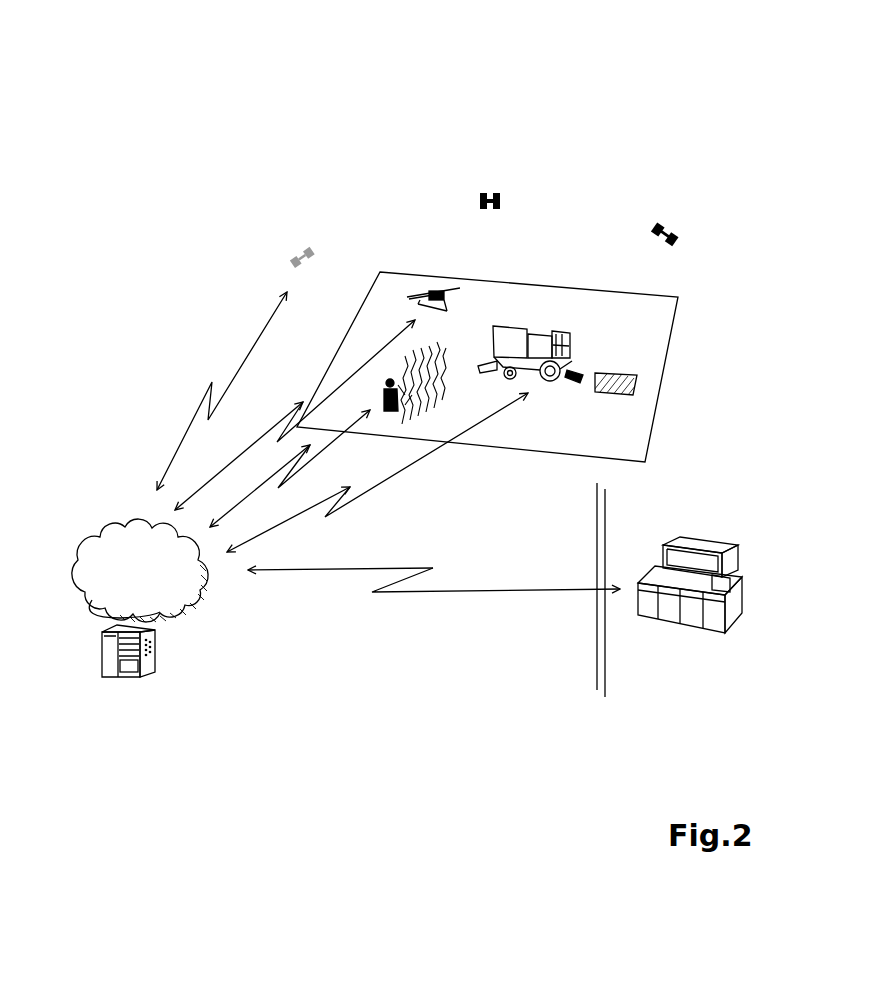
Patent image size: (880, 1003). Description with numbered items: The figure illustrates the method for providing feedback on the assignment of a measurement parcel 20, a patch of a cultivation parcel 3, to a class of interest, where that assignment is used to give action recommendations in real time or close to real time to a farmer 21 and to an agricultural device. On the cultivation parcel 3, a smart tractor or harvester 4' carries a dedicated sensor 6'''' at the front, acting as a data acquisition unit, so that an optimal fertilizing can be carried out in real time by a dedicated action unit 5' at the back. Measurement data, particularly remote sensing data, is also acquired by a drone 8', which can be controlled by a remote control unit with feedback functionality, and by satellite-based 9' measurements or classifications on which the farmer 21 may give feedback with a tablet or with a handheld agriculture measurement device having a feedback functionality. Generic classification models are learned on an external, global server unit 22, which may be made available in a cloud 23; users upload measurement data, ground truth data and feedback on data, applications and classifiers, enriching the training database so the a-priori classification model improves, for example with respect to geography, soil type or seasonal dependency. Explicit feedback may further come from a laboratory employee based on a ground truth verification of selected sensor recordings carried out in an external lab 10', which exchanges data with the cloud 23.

The cultivation parcel 3 is at (359, 238).
The drone 8' is at (611, 205).
The satellite 9' is at (732, 208).
The smart tractor or harvester 4' is at (658, 368).
The action unit 5' is at (655, 432).
The sensor / data acquisition unit 6'''' is at (701, 337).
The measurement parcel 20 is at (702, 402).
The farmer 21 is at (243, 307).
The cloud 23 is at (124, 532).
The external global server unit 22 is at (97, 688).
The external lab 10' is at (732, 632).